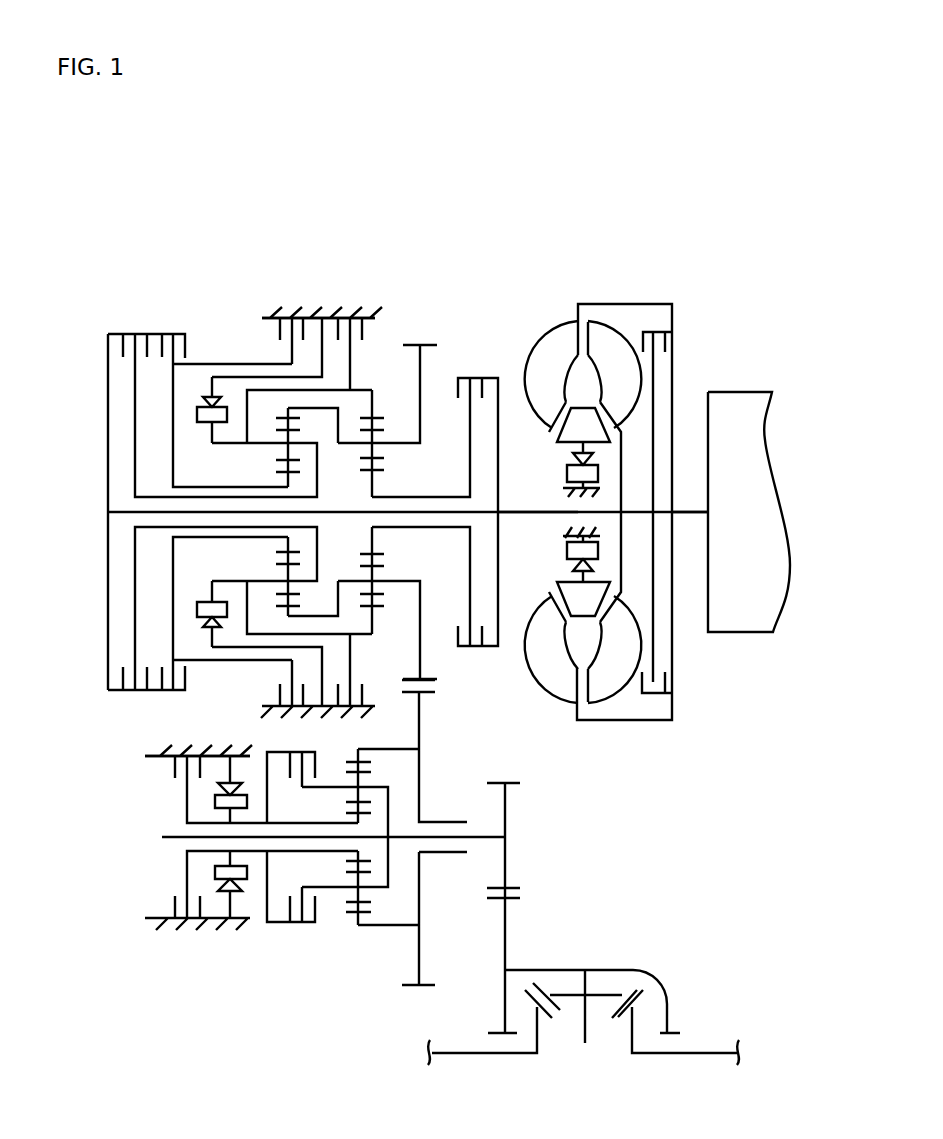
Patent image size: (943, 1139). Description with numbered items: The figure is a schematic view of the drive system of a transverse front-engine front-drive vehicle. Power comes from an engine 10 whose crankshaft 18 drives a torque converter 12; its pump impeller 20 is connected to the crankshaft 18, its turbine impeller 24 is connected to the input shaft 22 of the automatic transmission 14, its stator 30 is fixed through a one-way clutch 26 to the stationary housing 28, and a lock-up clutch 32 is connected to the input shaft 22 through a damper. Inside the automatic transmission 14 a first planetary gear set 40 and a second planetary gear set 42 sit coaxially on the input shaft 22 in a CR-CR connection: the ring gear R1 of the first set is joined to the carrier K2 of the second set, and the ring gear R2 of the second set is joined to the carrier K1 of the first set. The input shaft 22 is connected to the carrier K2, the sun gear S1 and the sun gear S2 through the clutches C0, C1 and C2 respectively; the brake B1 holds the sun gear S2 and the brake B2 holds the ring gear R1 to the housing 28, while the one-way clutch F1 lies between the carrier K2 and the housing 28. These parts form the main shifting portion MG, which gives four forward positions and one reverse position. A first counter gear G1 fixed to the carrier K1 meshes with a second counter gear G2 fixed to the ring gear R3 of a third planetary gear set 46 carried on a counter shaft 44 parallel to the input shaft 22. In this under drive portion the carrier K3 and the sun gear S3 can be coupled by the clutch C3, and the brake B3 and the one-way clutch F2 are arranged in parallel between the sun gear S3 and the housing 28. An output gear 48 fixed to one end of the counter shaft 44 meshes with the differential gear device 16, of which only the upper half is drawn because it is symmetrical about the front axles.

The engine 10 is at (745, 412).
The torque converter 12 is at (649, 275).
The automatic transmission 14 is at (434, 238).
The differential gear device 16 is at (579, 929).
The crankshaft 18 is at (692, 515).
The pump impeller 20 is at (565, 343).
The input shaft 22 is at (522, 510).
The turbine impeller 24 is at (603, 683).
The one-way clutch 26 is at (568, 615).
The housing 28 is at (322, 306).
The stator 30 is at (573, 432).
The lock-up clutch 32 is at (667, 342).
The first single-pinion planetary gear set 40 is at (382, 358).
The second single-pinion planetary gear set 42 is at (266, 398).
The counter shaft 44 is at (160, 835).
The third planetary gear set 46 is at (343, 932).
The output gear 48 is at (512, 887).
The clutch C0 is at (128, 333).
The clutch C1 is at (478, 375).
The clutch C2 is at (168, 332).
The clutch C3 is at (305, 922).
The brake B1 is at (270, 328).
The brake B2 is at (362, 330).
The brake B3 is at (168, 910).
The one-way clutch F1 is at (197, 413).
The one-way clutch F2 is at (236, 886).
The carrier K1 is at (400, 447).
The carrier K2 is at (262, 446).
The carrier K3 is at (370, 784).
The sun gear S1 is at (378, 474).
The sun gear S2 is at (280, 470).
The sun gear S3 is at (350, 813).
The ring gear R1 is at (377, 417).
The ring gear R2 is at (296, 413).
The ring gear R3 is at (346, 762).
The first counter gear G1 is at (428, 678).
The second counter gear G2 is at (427, 982).
The main shifting portion MG is at (96, 642).